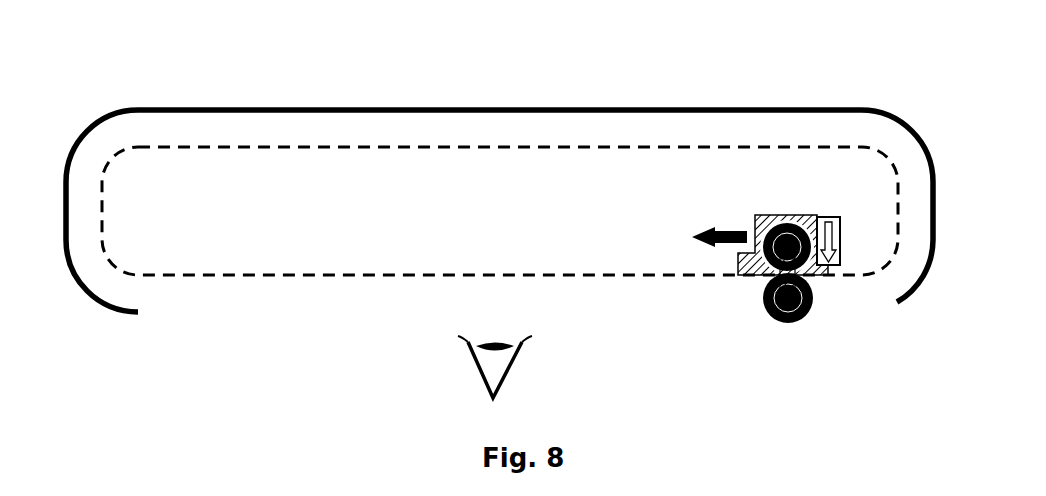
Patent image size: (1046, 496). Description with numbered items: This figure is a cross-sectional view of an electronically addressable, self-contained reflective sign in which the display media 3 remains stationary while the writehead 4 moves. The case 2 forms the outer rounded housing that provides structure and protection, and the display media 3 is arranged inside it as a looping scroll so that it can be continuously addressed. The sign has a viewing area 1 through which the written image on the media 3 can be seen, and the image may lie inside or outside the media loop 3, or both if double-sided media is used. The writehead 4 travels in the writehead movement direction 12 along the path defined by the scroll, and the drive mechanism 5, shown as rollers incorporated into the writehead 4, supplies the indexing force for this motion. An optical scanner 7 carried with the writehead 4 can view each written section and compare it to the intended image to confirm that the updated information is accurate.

The viewing area 1 is at (362, 296).
The case 2 is at (250, 110).
The display media 3 is at (245, 275).
The writehead 4 is at (737, 272).
The media drive mechanism 5 is at (807, 313).
The optical scanner 7 is at (843, 267).
The writehead movement direction 12 is at (700, 242).